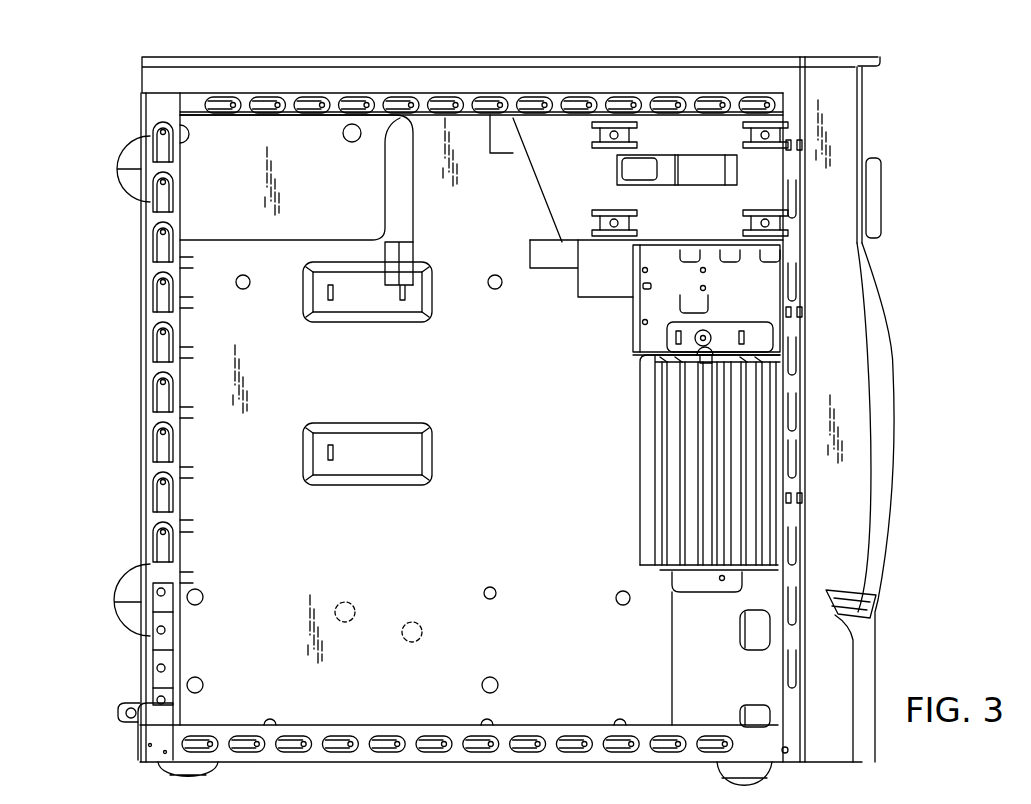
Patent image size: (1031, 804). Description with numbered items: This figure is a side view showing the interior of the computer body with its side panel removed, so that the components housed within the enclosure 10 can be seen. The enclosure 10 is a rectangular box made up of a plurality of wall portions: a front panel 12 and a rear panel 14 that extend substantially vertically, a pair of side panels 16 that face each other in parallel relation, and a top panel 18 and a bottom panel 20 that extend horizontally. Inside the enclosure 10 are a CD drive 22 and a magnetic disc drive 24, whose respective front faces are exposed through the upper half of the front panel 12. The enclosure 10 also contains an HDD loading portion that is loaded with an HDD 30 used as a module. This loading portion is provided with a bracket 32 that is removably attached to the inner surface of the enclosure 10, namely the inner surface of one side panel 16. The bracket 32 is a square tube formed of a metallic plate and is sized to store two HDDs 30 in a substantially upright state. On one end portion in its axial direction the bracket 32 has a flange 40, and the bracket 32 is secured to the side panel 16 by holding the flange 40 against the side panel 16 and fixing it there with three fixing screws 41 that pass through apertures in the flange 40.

The enclosure 10 is at (131, 325).
The front panel 12 is at (882, 468).
The rear panel 14 is at (145, 458).
The side panel 16 is at (218, 541).
The top panel 18 is at (152, 57).
The bottom panel 20 is at (512, 765).
The CD drive 22 is at (515, 146).
The magnetic disc drive 24 is at (590, 278).
The HDD 30 is at (690, 530).
The bracket 32 is at (656, 487).
The flange 40 is at (652, 452).
The fixing screws 41 is at (727, 333).